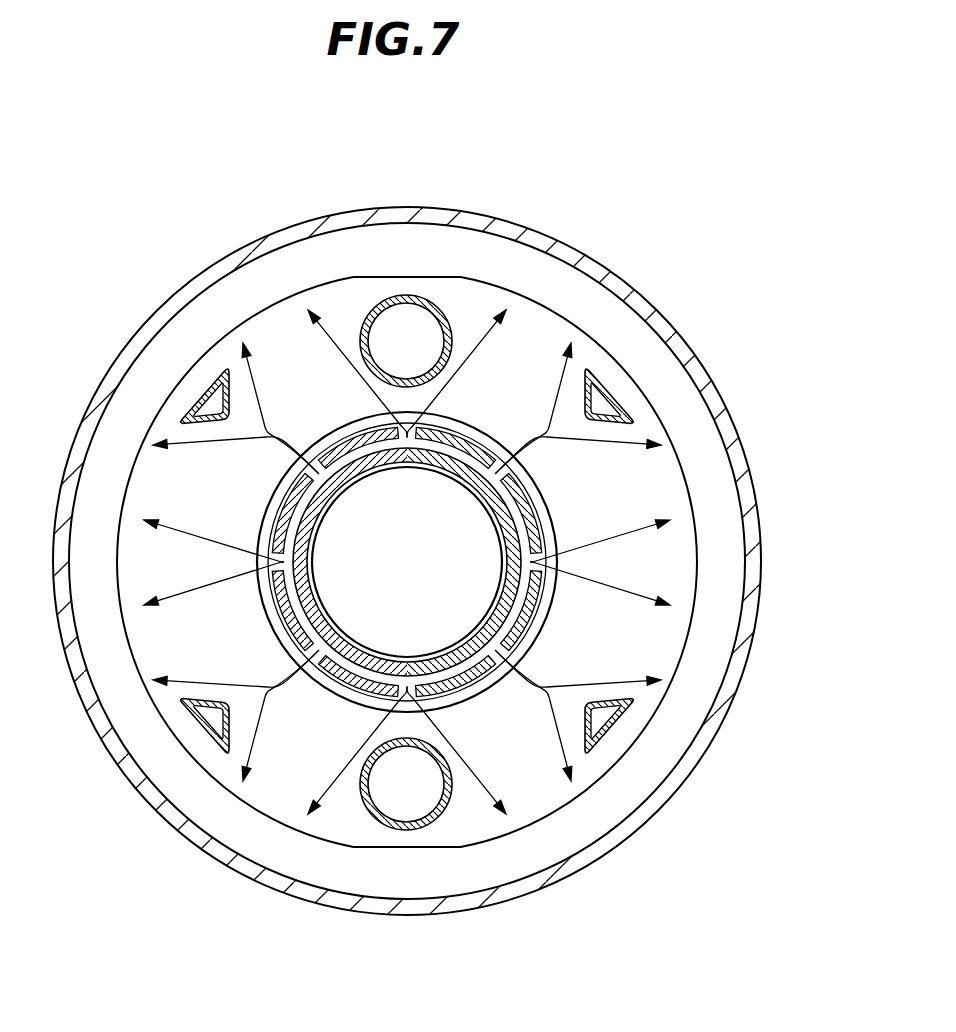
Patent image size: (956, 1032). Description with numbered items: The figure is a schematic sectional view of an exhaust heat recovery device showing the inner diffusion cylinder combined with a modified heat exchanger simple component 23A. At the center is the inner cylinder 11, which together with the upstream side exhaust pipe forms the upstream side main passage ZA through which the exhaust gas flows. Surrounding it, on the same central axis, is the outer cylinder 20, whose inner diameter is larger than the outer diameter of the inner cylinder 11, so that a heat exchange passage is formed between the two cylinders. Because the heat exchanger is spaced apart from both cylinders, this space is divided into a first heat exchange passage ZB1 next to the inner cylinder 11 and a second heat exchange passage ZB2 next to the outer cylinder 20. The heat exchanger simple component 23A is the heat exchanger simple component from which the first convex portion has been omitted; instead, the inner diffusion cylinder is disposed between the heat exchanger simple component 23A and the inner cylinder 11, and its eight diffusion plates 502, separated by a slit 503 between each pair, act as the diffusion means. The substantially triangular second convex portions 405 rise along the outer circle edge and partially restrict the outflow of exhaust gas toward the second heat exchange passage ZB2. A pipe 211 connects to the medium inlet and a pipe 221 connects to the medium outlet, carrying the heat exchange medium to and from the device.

The outer cylinder 20 is at (574, 246).
The heat exchanger simple component 23A is at (678, 455).
The pipe 221 is at (411, 294).
The pipe 211 is at (442, 818).
The second convex portion 405 is at (195, 390).
The diffusion plate 502 is at (362, 434).
The slit 503 is at (313, 462).
The inner cylinder 11 is at (503, 552).
The upstream side main passage ZA is at (381, 518).
The first heat exchange passage ZB1 is at (370, 707).
The second heat exchange passage ZB2 is at (705, 650).